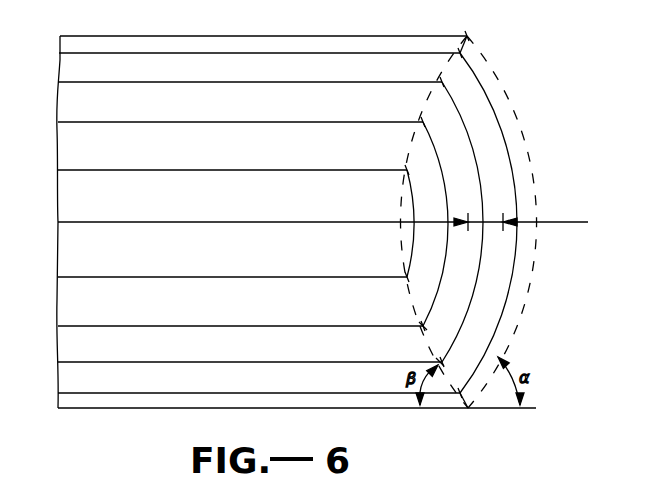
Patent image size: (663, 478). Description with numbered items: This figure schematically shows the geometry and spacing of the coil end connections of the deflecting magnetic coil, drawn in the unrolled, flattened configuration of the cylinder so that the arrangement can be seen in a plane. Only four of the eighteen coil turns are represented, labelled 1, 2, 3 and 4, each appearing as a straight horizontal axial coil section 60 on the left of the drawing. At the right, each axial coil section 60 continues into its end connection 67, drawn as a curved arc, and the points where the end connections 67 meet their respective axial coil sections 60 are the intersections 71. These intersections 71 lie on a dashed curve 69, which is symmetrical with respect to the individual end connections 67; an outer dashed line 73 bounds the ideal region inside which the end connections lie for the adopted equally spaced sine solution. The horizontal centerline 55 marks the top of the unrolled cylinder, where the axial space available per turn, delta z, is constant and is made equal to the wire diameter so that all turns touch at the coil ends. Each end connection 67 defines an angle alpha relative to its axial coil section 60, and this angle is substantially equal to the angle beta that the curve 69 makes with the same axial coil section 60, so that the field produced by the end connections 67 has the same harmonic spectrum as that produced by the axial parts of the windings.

The first layer 1 is at (300, 393).
The second layer 2 is at (272, 362).
The third layer 3 is at (263, 326).
The fourth layer 4 is at (258, 277).
The optical axis 55 is at (550, 221).
The axial coil section 60 is at (124, 400).
The coil end connection 67 is at (508, 115).
The curve 69 is at (448, 63).
The intersection 71 is at (413, 319).
The outer boundary line 73 is at (485, 62).